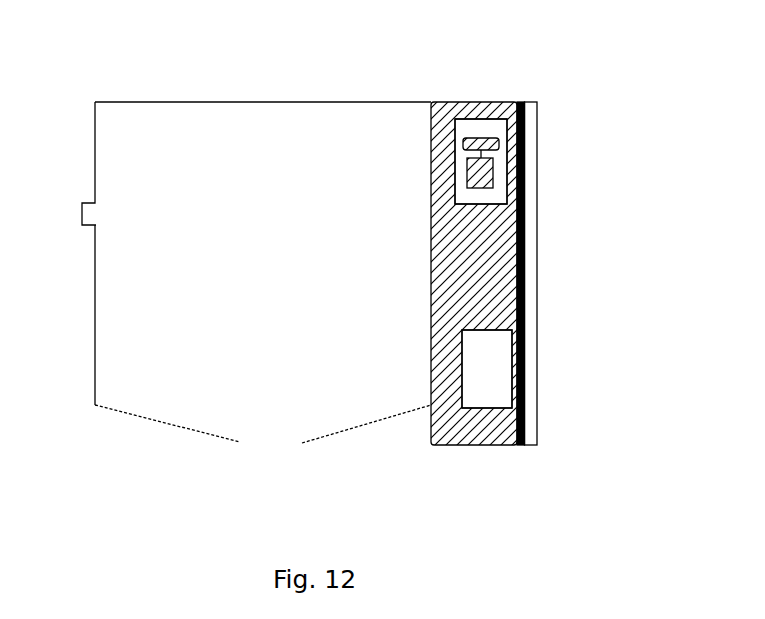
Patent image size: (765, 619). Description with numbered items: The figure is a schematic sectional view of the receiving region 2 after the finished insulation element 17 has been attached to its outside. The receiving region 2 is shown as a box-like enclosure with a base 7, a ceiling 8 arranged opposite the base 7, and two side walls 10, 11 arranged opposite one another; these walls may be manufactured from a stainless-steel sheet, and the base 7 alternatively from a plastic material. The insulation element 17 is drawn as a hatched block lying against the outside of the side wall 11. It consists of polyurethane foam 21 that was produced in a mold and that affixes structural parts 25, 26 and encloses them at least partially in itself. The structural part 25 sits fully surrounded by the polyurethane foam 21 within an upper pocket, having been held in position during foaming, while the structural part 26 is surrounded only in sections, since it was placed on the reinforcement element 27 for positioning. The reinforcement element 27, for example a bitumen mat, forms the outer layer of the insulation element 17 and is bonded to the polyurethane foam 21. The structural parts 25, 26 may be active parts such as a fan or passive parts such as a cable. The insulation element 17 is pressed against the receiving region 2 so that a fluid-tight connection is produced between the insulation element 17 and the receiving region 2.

The receiving region 2 is at (226, 65).
The base 7 is at (150, 420).
The ceiling 8 is at (140, 101).
The side wall 10 is at (95, 276).
The side wall 11 is at (430, 283).
The insulation element 17 is at (566, 112).
The polyurethane foam 21 is at (512, 248).
The structural part 25 is at (480, 110).
The structural part 26 is at (527, 338).
The reinforcement element 27 is at (538, 210).